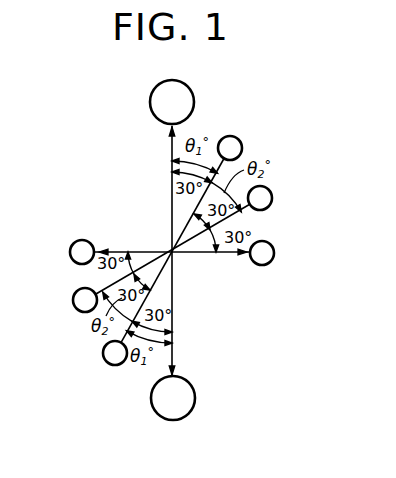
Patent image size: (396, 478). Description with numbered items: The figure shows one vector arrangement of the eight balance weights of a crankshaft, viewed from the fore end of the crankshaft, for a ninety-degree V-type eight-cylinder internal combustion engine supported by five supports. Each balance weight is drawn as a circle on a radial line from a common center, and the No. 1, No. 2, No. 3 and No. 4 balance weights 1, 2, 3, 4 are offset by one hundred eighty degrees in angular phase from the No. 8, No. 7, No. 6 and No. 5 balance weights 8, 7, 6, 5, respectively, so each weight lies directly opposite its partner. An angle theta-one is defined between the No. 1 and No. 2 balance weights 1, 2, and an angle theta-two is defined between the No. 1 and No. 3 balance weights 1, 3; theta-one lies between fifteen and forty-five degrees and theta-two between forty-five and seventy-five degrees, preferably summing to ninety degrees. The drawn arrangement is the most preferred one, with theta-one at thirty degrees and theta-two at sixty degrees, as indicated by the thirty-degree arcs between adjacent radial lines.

The No. 1 balance weight 1 is at (151, 405).
The No. 2 balance weight 2 is at (105, 365).
The No. 3 balance weight 3 is at (73, 305).
The No. 4 balance weight 4 is at (69, 252).
The No. 5 balance weight 5 is at (275, 254).
The No. 6 balance weight 6 is at (273, 198).
The No. 7 balance weight 7 is at (243, 145).
The No. 8 balance weight 8 is at (196, 101).